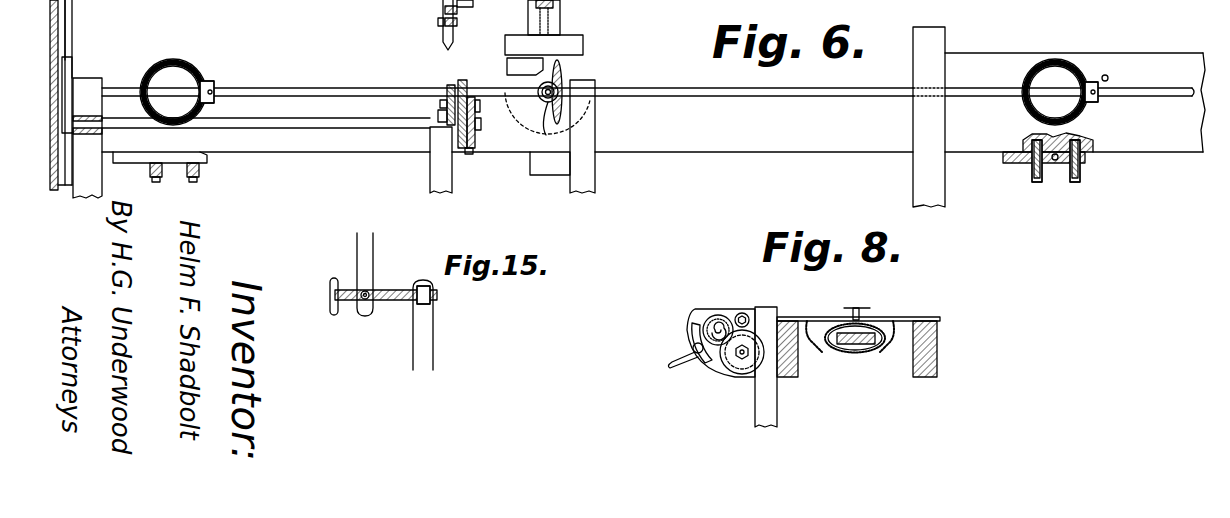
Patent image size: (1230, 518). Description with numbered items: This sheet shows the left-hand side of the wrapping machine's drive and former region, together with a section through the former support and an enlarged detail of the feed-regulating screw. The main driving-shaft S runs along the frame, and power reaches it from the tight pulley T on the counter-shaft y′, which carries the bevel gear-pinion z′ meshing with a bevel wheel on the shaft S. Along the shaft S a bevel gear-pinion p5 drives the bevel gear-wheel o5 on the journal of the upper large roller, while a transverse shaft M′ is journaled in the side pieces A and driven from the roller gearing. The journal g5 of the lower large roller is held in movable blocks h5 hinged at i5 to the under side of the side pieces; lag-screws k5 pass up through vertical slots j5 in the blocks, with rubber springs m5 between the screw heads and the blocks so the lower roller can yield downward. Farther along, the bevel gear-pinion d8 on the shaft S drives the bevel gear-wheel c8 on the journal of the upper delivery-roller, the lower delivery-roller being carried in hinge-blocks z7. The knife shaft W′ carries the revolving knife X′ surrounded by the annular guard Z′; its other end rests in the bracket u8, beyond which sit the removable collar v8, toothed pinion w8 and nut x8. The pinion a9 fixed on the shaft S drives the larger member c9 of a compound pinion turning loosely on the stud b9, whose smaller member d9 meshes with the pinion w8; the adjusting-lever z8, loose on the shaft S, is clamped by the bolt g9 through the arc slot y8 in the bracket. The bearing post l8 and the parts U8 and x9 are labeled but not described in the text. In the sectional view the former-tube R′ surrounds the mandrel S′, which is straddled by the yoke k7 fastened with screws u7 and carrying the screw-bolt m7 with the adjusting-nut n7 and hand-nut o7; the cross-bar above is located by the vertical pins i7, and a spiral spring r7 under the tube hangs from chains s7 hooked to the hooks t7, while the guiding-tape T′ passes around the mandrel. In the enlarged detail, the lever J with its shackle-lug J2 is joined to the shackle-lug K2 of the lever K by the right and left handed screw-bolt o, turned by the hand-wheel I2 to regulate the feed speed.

In FIG. 6, the revolving knife X′ is at (66, 15).
In FIG. 6, the annular guard Z′ is at (64, 40).
In FIG. 6, the bearing post l8 is at (86, 112).
In FIG. 6, the main driving-shaft S is at (292, 86).
In FIG. 8, the main driving-shaft S is at (722, 312).
In FIG. 6, the knife shaft W′ is at (292, 128).
In FIG. 8, the knife shaft W′ is at (735, 372).
In FIG. 6, the hinge-blocks z7 is at (205, 158).
In FIG. 6, the bevel gear-wheel c8 is at (194, 70).
In FIG. 6, the bevel gear-pinion d8 is at (214, 80).
In FIG. 6, the side pieces A is at (1075, 102).
In FIG. 8, the side pieces A is at (790, 377).
In FIG. 6, the nut x8 is at (443, 42).
In FIG. 8, the nut x8 is at (744, 360).
In FIG. 6, the bolt g9 is at (438, 22).
In FIG. 8, the bolt g9 is at (700, 356).
In FIG. 6, the tight pulley T is at (583, 42).
In FIG. 6, the arm U8 is at (507, 62).
In FIG. 6, the bracket u8 is at (450, 85).
In FIG. 8, the bracket u8 is at (690, 322).
In FIG. 6, the pinion a9 is at (462, 80).
In FIG. 8, the pinion a9 is at (744, 313).
In FIG. 6, the larger compound pinion c9 is at (470, 97).
In FIG. 8, the larger compound pinion c9 is at (720, 316).
In FIG. 6, the smaller compound pinion d9 is at (480, 106).
In FIG. 8, the smaller compound pinion d9 is at (694, 350).
In FIG. 6, the pin x9 is at (481, 126).
In FIG. 6, the adjusting-lever z8 is at (425, 107).
In FIG. 8, the adjusting-lever z8 is at (672, 364).
In FIG. 6, the removable collar v8 is at (456, 150).
In FIG. 6, the toothed pinion w8 is at (470, 152).
In FIG. 8, the toothed pinion w8 is at (728, 366).
In FIG. 6, the counter-shaft y′ is at (498, 30).
In FIG. 6, the bevel gear-pinion z′ is at (552, 100).
In FIG. 6, the bevel gear-wheel o5 is at (1062, 62).
In FIG. 6, the bevel gear-pinion p5 is at (1092, 82).
In FIG. 6, the transverse shaft M′ is at (1108, 78).
In FIG. 6, the movable blocks h5 is at (1085, 158).
In FIG. 6, the hinge i5 is at (1005, 155).
In FIG. 6, the vertical slots j5 is at (1028, 160).
In FIG. 6, the springs m5 is at (1036, 170).
In FIG. 6, the lag-screws k5 is at (1034, 182).
In FIG. 6, the journal g5 is at (1053, 160).
In FIG. 8, the stud b9 is at (707, 318).
In FIG. 8, the arc slot y8 is at (696, 335).
In FIG. 8, the guiding-tape T′ is at (860, 352).
In FIG. 8, the hand-nut o7 is at (859, 300).
In FIG. 8, the adjusting-nut n7 is at (850, 320).
In FIG. 8, the screw-bolt m7 is at (862, 320).
In FIG. 8, the former-tube R′ is at (878, 326).
In FIG. 8, the yoke k7 is at (805, 321).
In FIG. 8, the hooks t7 is at (818, 321).
In FIG. 8, the vertical pins i7 is at (786, 317).
In FIG. 8, the chains s7 is at (812, 342).
In FIG. 8, the screws u7 is at (838, 350).
In FIG. 8, the spiral spring r7 is at (848, 352).
In FIG. 8, the mandrel S′ is at (876, 345).
In FIG. 15, the lever J is at (356, 254).
In FIG. 15, the shackle-lug J2 is at (372, 275).
In FIG. 15, the screw-bolt o is at (392, 290).
In FIG. 15, the hand-wheel I2 is at (334, 315).
In FIG. 15, the lever K is at (433, 330).
In FIG. 15, the shackle-lug K2 is at (430, 300).